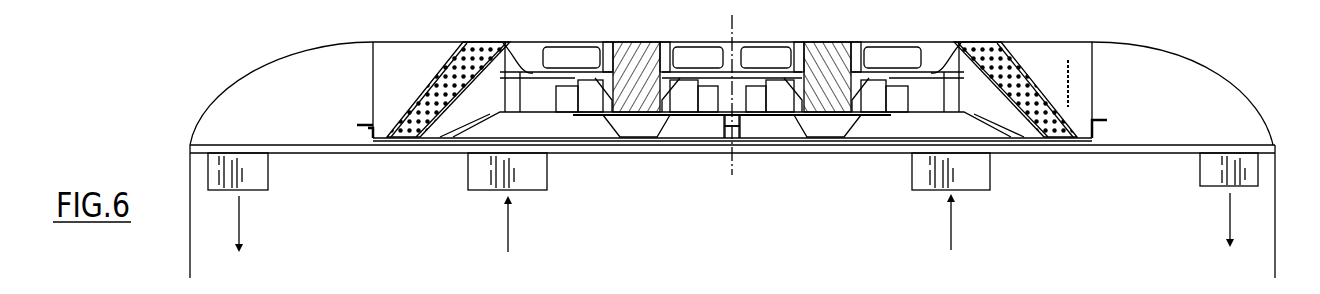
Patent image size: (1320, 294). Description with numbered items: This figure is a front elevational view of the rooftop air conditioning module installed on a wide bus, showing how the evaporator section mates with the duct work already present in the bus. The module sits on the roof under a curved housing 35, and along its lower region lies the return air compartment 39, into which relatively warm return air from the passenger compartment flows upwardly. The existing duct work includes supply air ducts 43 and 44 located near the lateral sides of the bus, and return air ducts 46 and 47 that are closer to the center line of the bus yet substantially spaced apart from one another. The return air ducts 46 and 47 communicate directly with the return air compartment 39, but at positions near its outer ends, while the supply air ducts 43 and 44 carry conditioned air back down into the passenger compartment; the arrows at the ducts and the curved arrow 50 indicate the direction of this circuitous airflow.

The housing 35 is at (1222, 70).
The return air compartment 39 is at (872, 147).
The supply air duct 43 is at (248, 178).
The supply air duct 44 is at (1217, 175).
The return air duct 46 is at (528, 178).
The return air duct 47 is at (970, 175).
The air flow direction 50 is at (1141, 176).